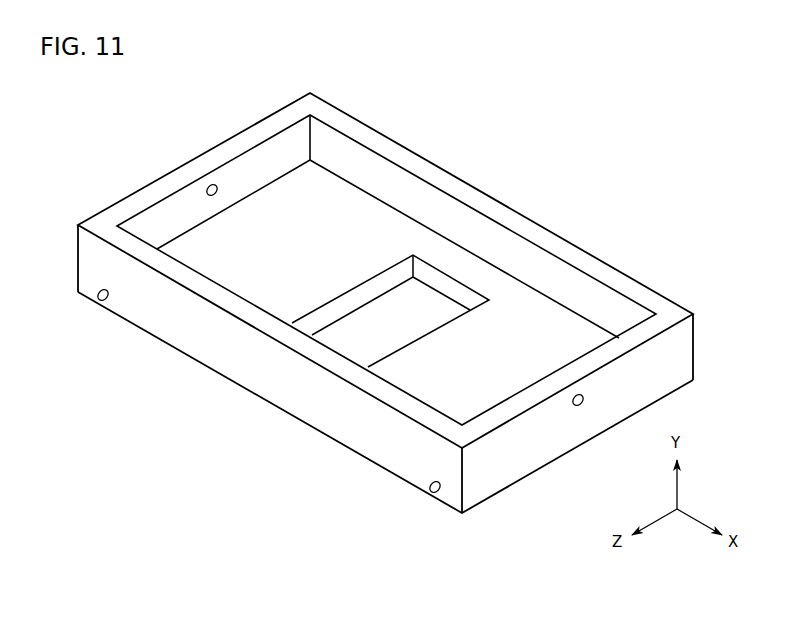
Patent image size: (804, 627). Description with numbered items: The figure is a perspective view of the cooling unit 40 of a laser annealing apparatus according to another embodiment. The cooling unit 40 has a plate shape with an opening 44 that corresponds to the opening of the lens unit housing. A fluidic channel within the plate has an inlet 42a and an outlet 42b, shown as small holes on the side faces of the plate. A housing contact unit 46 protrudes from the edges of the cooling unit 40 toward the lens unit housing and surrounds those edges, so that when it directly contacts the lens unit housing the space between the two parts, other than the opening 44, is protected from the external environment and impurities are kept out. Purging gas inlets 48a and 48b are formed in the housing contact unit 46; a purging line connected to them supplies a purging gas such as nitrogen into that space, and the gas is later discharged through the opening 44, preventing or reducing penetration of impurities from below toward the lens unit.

The cooling unit 40 is at (608, 215).
The inlet 42a is at (98, 299).
The outlet 42b is at (430, 491).
The opening 44 is at (443, 280).
The housing contact unit 46 is at (400, 160).
The purging gas inlet 48a is at (584, 403).
The purging gas inlet 48b is at (218, 186).